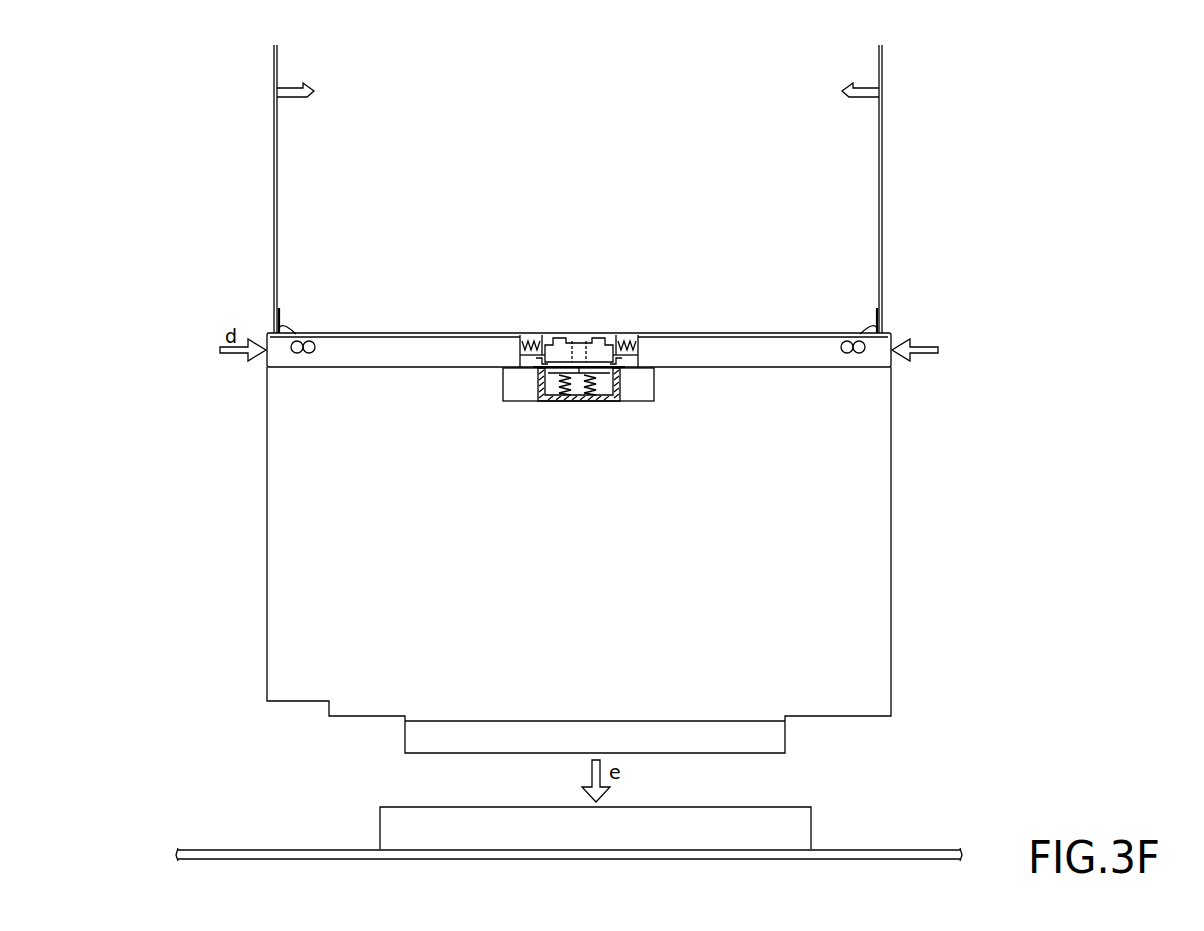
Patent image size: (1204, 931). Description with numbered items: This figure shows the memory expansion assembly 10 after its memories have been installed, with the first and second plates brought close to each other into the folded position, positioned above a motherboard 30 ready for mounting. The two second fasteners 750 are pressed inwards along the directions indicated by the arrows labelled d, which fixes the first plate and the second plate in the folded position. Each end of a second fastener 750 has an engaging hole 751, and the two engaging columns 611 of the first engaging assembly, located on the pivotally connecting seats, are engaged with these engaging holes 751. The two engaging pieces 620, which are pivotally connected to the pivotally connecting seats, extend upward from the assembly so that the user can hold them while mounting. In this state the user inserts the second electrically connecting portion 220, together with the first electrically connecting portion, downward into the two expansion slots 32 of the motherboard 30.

The memory expansion assembly 10 is at (940, 297).
The motherboard 30 is at (921, 849).
The expansion slots 32 is at (792, 826).
The second electrically connecting portion 220 is at (768, 739).
The engaging columns 611 is at (298, 341).
The engaging pieces 620 is at (272, 200).
The second fasteners 750 is at (427, 349).
The engaging hole 751 is at (316, 348).